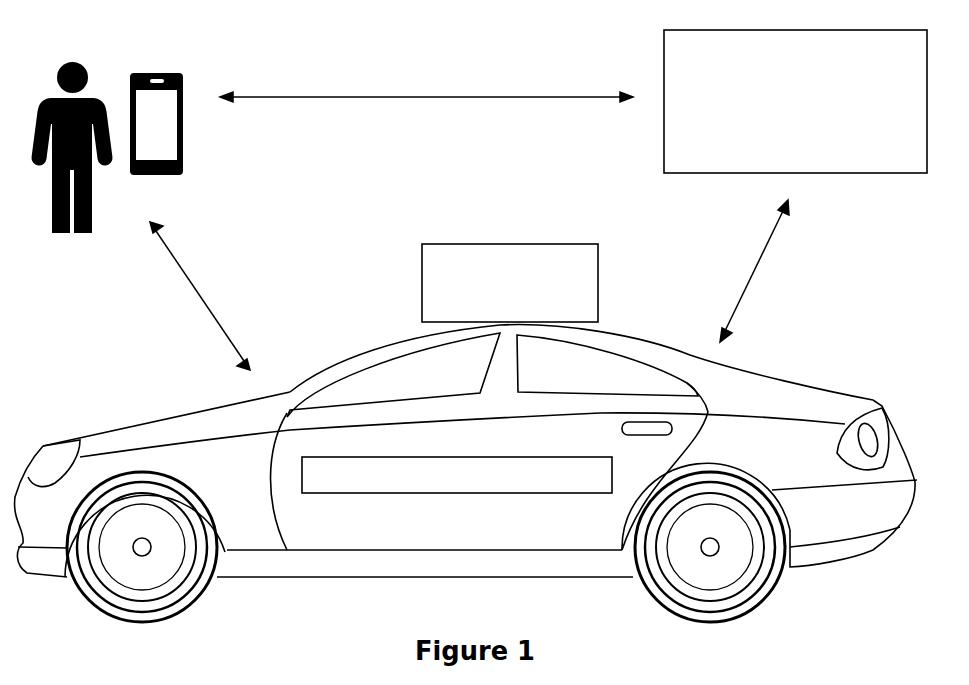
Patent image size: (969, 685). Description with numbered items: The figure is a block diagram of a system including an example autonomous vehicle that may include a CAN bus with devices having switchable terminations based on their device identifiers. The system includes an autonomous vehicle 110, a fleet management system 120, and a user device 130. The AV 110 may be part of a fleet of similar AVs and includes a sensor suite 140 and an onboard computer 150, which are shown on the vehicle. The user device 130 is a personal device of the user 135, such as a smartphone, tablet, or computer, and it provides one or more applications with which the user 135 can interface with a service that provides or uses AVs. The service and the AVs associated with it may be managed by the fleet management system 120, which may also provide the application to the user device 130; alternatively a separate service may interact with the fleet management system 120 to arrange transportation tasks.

The autonomous vehicle 110 is at (799, 529).
The fleet management system 120 is at (777, 144).
The user device 130 is at (176, 130).
The user 135 is at (63, 242).
The sensor suite 140 is at (489, 310).
The onboard computer 150 is at (540, 487).